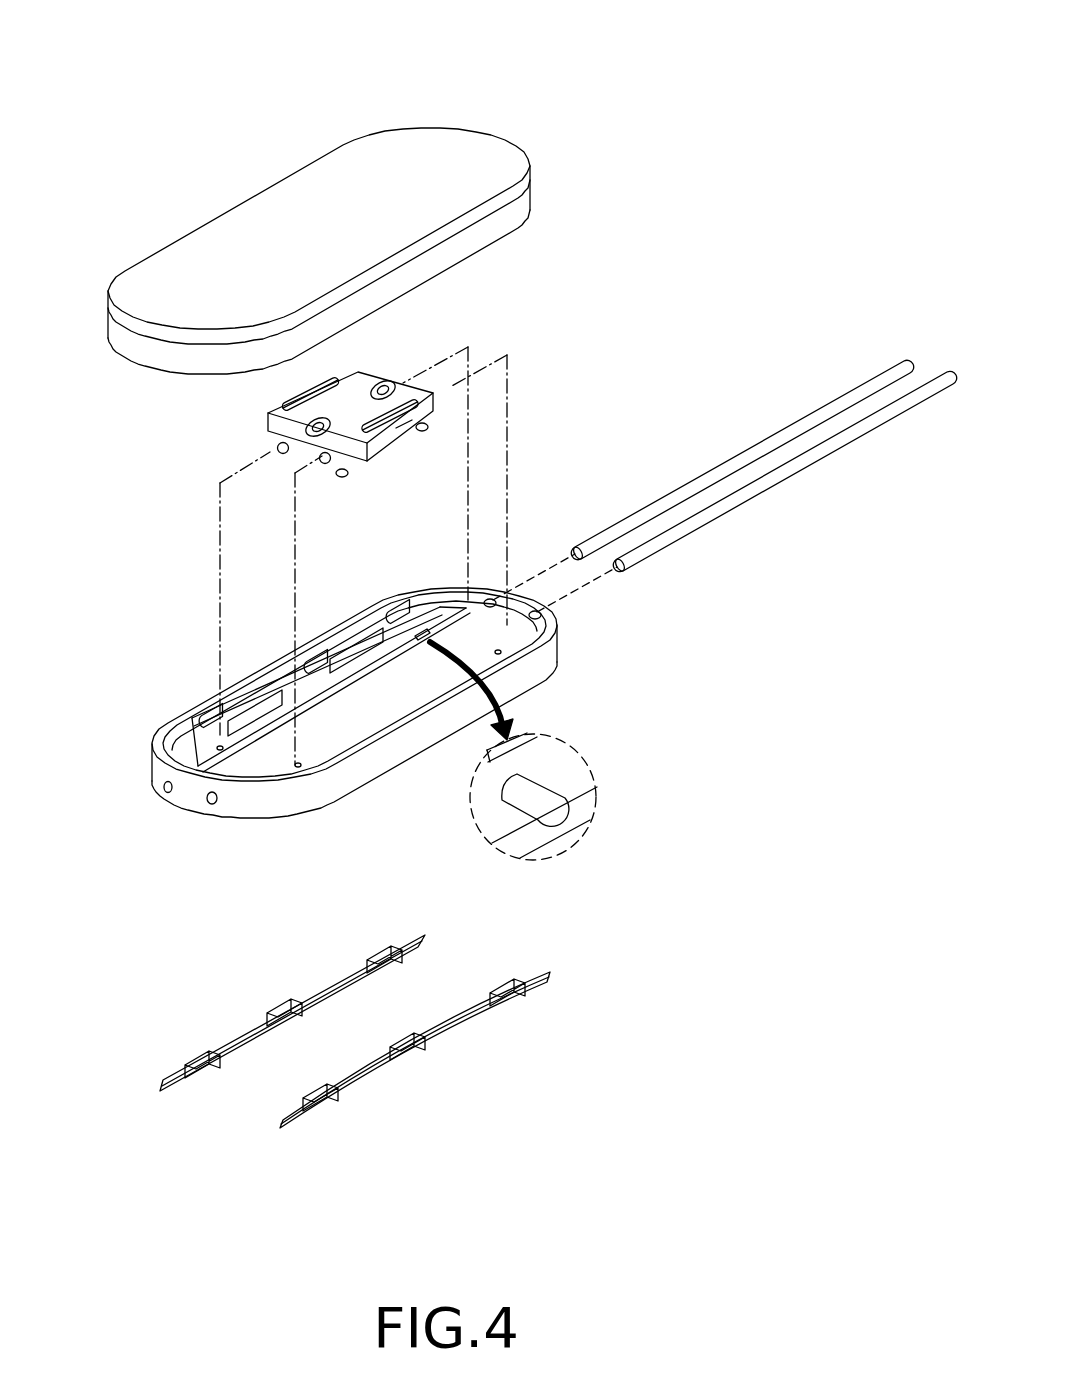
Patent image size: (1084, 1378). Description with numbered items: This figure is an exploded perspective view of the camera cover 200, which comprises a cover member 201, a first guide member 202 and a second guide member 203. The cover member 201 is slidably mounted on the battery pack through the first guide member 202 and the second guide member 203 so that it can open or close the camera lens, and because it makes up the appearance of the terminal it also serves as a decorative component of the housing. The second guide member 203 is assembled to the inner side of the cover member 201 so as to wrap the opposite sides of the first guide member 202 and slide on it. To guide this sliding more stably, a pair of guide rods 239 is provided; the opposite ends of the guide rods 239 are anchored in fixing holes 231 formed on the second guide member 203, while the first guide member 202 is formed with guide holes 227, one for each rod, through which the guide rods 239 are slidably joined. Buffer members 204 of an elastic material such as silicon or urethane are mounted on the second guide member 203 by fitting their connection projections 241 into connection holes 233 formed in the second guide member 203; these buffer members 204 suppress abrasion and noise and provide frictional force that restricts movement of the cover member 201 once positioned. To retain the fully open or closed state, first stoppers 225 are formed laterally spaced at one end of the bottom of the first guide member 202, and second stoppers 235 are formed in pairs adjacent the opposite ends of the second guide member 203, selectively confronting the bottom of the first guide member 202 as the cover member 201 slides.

The camera cover 200 is at (173, 23).
The cover member 201 is at (458, 113).
The first guide member 202 is at (307, 408).
The second guide member 203 is at (375, 662).
The buffer member 204 is at (359, 1035).
The first stopper 225 is at (397, 435).
The guide hole 227 is at (280, 447).
The fixing hole 231 is at (490, 598).
The connection hole 233 is at (393, 612).
The second stopper 235 is at (216, 748).
The guide rod 239 is at (825, 412).
The connection projection 241 is at (380, 943).